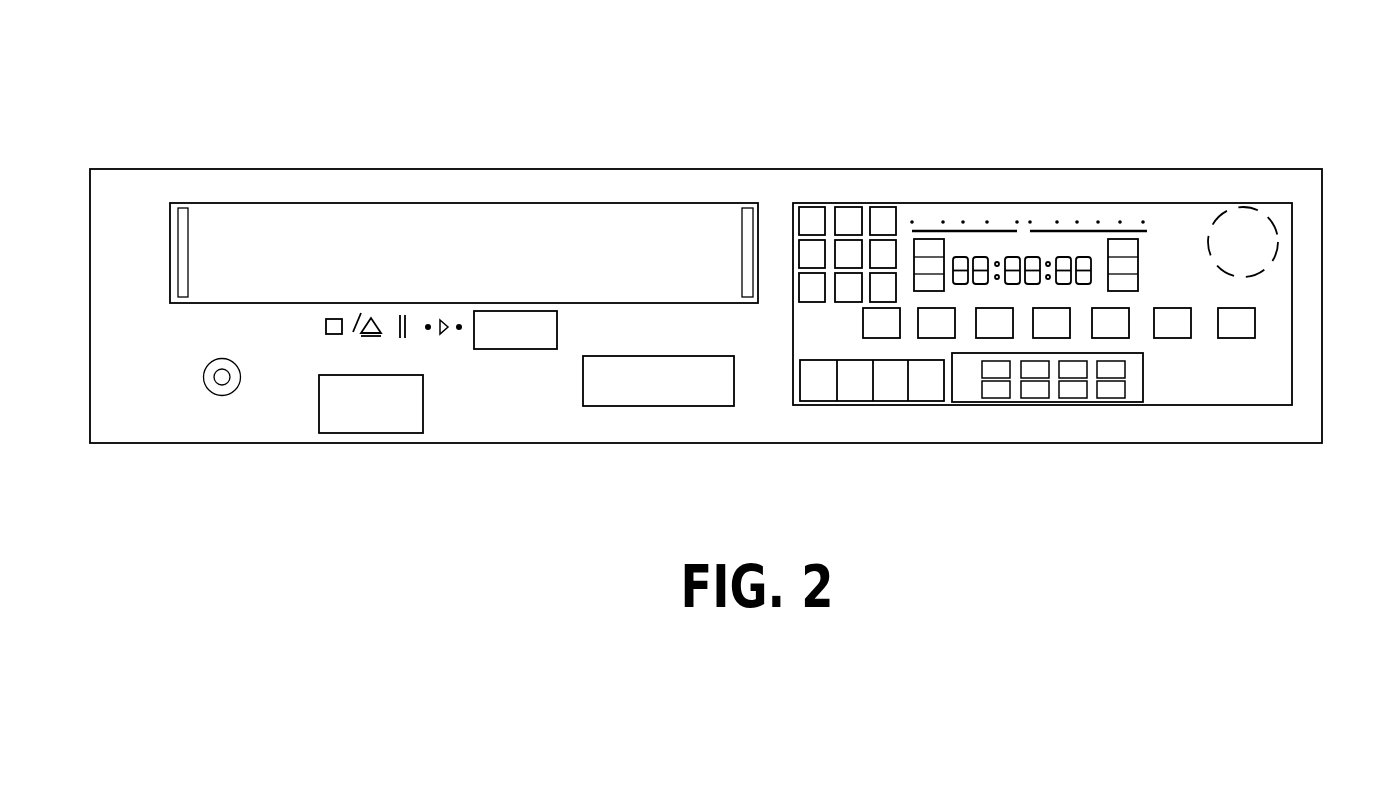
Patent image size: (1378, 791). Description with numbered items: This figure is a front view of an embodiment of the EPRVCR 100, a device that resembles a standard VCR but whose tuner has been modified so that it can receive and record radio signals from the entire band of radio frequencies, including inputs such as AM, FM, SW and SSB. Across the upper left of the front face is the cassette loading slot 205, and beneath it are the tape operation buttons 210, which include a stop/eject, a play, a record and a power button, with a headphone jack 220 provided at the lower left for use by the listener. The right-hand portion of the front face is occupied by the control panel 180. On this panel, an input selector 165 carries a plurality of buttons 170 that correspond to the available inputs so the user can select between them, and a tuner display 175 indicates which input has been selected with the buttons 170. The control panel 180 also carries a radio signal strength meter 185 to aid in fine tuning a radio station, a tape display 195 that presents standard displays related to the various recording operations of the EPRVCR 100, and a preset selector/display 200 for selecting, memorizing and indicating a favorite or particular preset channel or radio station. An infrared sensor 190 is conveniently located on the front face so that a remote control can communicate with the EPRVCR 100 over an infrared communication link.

The EPRVCR 100 is at (766, 89).
The input selector 165 is at (841, 429).
The buttons 170 is at (858, 403).
The tuner display 175 is at (1200, 377).
The control panel 180 is at (988, 208).
The radio signal strength meter 185 is at (1272, 313).
The infrared sensor 190 is at (1258, 236).
The tape display 195 is at (1038, 229).
The preset selector/display 200 is at (862, 194).
The cassette loading slot 205 is at (593, 237).
The tape operation buttons 210 is at (752, 433).
The headphone jack 220 is at (220, 390).